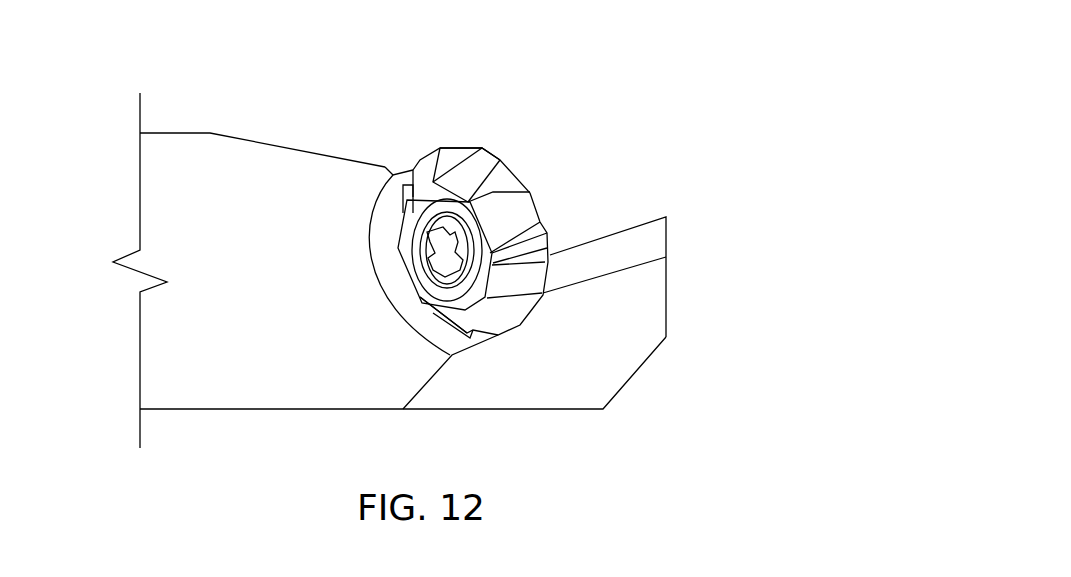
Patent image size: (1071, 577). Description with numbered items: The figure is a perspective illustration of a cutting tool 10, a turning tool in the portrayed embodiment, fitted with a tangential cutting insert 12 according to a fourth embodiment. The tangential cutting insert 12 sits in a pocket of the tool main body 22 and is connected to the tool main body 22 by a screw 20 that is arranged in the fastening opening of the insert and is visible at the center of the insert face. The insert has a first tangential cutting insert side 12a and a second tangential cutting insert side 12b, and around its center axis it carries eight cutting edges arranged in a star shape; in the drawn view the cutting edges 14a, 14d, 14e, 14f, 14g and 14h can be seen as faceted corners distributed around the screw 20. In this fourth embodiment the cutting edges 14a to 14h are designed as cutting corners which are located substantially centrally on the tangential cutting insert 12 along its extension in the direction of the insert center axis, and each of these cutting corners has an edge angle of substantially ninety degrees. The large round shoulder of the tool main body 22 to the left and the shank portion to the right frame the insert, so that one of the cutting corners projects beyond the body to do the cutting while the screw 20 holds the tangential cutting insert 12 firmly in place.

The cutting tool 10 is at (653, 53).
The tangential cutting insert 12 is at (500, 187).
The first tangential cutting insert side 12a is at (400, 196).
The second tangential cutting insert side 12b is at (503, 145).
The cutting edge 14a is at (415, 167).
The cutting edge 14d is at (470, 330).
The cutting edge 14e is at (533, 313).
The cutting edge 14f is at (547, 257).
The cutting edge 14g is at (522, 190).
The cutting edge 14h is at (458, 147).
The screw 20 is at (423, 258).
The tool main body 22 is at (638, 225).